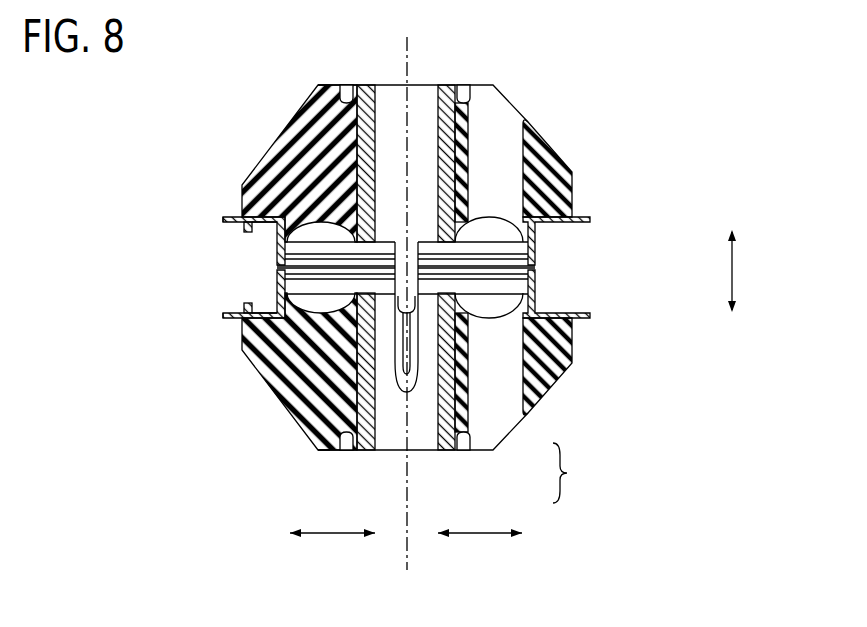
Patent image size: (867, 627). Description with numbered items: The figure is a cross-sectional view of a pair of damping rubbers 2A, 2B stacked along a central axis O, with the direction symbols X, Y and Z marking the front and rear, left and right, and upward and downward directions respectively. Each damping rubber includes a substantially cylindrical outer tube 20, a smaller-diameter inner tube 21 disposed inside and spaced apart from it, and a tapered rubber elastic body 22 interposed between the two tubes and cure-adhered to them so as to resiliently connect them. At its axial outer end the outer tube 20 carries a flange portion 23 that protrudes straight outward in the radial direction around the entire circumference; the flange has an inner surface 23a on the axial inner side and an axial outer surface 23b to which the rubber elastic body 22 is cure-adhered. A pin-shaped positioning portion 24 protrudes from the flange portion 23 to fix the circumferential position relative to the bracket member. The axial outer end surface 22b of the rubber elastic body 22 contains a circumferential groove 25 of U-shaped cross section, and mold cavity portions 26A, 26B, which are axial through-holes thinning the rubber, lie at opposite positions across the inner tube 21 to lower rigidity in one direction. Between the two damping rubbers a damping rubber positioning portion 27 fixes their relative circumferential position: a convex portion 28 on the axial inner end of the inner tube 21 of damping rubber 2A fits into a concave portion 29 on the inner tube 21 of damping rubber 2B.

The damping rubber 2A is at (588, 182).
The damping rubber 2B is at (588, 358).
The outer tube 20 is at (535, 247).
The inner tube 21 is at (445, 85).
The rubber elastic body 22 is at (287, 127).
The end surface of the axial outer side 22b is at (315, 82).
The flange portion 23 is at (226, 226).
The inner surface 23a is at (232, 230).
The axial outer surface 23b is at (226, 210).
The positioning portion 24 is at (245, 235).
The groove 25 is at (347, 85).
The mold cavity portion 26A is at (497, 178).
The mold cavity portion 26B is at (495, 380).
The damping rubber positioning portion 27 is at (576, 473).
The convex portion 28 is at (395, 393).
The concave portion 29 is at (425, 318).
The central axis O is at (409, 50).
The front and rear direction X is at (337, 535).
The left and right direction Y is at (493, 535).
The upward and downward direction Z is at (735, 272).